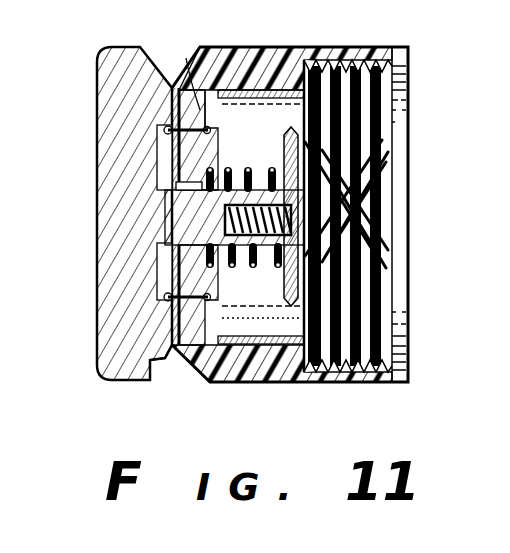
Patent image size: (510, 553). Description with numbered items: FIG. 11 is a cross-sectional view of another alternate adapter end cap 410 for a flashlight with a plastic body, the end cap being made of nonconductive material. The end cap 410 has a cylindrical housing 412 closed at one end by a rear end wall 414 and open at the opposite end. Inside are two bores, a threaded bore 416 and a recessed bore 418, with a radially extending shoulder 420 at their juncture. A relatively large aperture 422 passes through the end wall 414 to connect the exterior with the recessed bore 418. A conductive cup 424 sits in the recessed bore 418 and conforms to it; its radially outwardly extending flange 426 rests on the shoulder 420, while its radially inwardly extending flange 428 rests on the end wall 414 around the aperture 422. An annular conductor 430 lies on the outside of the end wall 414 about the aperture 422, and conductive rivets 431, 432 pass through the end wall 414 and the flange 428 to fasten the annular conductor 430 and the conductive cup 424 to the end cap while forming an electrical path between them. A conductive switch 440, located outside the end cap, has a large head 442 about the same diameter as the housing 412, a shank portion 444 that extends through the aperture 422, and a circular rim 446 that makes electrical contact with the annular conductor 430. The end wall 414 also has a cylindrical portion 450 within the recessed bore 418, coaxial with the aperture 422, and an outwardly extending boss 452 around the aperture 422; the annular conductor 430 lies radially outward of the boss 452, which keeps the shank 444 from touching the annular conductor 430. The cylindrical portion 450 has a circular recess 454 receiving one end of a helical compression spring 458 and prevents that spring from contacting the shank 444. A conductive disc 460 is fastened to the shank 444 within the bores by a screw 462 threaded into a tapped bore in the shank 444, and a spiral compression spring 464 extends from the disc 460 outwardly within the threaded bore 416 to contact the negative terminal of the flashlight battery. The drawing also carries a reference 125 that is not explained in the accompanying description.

The threaded socket wall 125 is at (378, 302).
The end cap 410 is at (399, 46).
The cylindrical housing 412 is at (271, 88).
The rear end wall 414 is at (170, 160).
The threaded bore 416 is at (366, 364).
The recessed bore 418 is at (248, 348).
The shoulder 420 is at (307, 358).
The aperture 422 is at (209, 158).
The conductive cup 424 is at (293, 96).
The radially outwardly extending flange 426 is at (338, 64).
The radially inwardly extending flange 428 is at (179, 112).
The annular conductor 430 is at (176, 352).
The rivet 431 is at (162, 127).
The rivet 432 is at (166, 298).
The conductive switch 440 is at (100, 249).
The head 442 is at (150, 272).
The shank portion 444 is at (200, 212).
The rim 446 is at (170, 350).
The cylindrical portion 450 is at (222, 282).
The boss 452 is at (178, 188).
The recess 454 is at (220, 170).
The helical compression spring 458 is at (378, 250).
The conductive disc 460 is at (385, 128).
The screw 462 is at (378, 174).
The spiral compression spring 464 is at (378, 211).